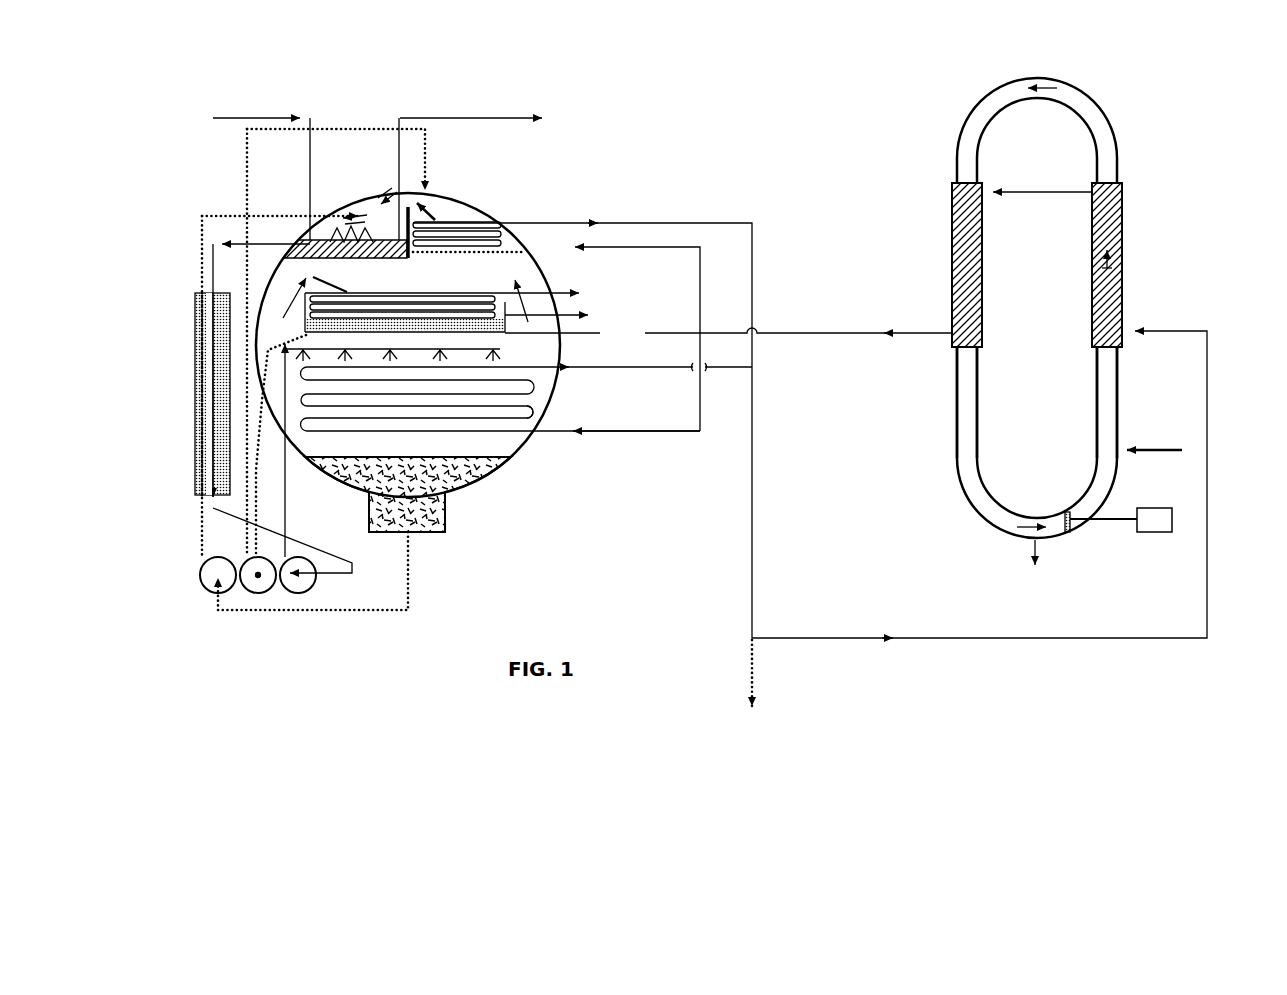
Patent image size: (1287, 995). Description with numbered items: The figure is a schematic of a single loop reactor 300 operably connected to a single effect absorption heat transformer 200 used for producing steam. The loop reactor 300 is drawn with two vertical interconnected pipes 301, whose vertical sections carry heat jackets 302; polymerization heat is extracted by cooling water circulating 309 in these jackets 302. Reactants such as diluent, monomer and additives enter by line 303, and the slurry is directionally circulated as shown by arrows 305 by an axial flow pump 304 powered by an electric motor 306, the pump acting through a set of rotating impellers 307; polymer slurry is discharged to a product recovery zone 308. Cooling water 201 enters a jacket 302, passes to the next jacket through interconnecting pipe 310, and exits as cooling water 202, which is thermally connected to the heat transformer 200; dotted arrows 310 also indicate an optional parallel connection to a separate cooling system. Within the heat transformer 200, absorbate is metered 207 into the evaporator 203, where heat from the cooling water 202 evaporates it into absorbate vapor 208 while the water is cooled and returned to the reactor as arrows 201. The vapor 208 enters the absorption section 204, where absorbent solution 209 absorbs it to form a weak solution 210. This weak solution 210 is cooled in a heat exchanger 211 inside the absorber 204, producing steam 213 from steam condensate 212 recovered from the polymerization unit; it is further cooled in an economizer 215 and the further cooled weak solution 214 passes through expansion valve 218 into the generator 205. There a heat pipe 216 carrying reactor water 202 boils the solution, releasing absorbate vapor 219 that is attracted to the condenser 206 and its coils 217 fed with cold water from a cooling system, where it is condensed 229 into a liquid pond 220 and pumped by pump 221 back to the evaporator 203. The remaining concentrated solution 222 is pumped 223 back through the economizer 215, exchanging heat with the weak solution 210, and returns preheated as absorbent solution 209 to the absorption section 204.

The absorption heat transformer 200 is at (548, 175).
The cooling water 201 is at (563, 222).
The cooling water 202 is at (620, 248).
The evaporator 203 is at (463, 213).
The absorption section 204 is at (371, 202).
The generator 205 is at (455, 423).
The condenser 206 is at (348, 315).
The absorbate metering 207 is at (342, 128).
The absorbate vapor 208 is at (414, 201).
The absorbent solution 209 is at (260, 213).
The weak solution 210 is at (268, 242).
The heat exchanger 211 is at (381, 214).
The steam condensate 212 is at (242, 116).
The steam 213 is at (447, 117).
The further cooled weak solution 214 is at (500, 352).
The economizer 215 is at (200, 390).
The heat pipe 216 is at (540, 412).
The condenser coils 217 is at (453, 293).
The expansion valve 218 is at (308, 582).
The absorbate vapor 219 is at (288, 292).
The liquid pond 220 is at (258, 468).
The pump 221 is at (258, 585).
The concentrated solution 222 is at (477, 483).
The pump 223 is at (202, 573).
The condensation 229 is at (320, 277).
The loop reactor 300 is at (1105, 108).
The pipes 301 is at (960, 383).
The heat jackets 302 is at (1122, 210).
The line 303 is at (1162, 445).
The axial flow pump 304 is at (1113, 525).
The arrows 305 is at (1033, 80).
The electric motor 306 is at (1165, 518).
The rotating impellers 307 is at (1067, 533).
The product recovery zone 308 is at (1033, 571).
The cooling water circulation 309 is at (1115, 260).
The interconnecting pipe 310 is at (1017, 192).